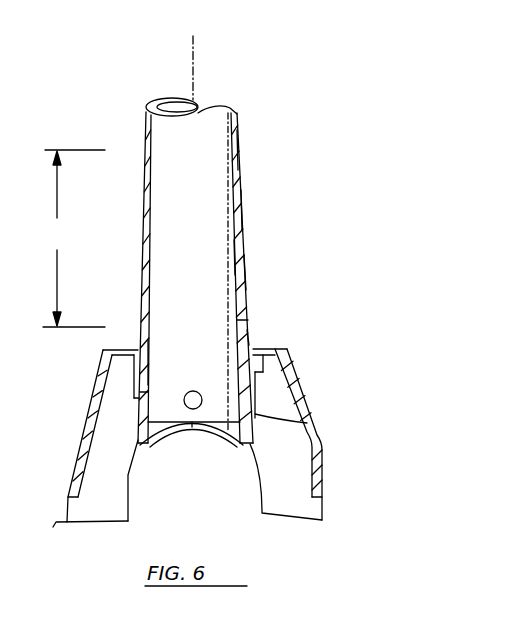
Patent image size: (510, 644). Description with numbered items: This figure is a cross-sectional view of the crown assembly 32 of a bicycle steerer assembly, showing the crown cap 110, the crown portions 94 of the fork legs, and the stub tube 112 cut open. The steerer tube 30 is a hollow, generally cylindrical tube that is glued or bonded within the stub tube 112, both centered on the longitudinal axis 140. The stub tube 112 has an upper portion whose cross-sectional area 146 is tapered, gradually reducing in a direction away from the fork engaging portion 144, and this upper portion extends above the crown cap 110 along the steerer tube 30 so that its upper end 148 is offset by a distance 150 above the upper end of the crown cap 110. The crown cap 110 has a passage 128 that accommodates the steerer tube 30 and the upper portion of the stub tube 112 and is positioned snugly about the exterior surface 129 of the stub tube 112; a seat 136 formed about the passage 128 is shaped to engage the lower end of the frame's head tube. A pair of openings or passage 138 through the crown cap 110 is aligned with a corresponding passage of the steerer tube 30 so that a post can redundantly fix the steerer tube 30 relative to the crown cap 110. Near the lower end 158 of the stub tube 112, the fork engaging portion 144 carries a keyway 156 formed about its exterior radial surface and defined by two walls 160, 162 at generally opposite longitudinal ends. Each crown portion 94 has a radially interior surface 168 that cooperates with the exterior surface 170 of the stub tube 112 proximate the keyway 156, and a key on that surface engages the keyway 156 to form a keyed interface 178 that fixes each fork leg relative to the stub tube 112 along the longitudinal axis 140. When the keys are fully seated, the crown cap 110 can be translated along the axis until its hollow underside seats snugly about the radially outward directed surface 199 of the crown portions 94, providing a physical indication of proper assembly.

The steerer tube 30 is at (238, 115).
The longitudinal axis 140 is at (196, 36).
The upper end 148 is at (240, 158).
The stub tube 112 is at (248, 211).
The cross-sectional area 146 is at (242, 257).
The exterior surface 129 is at (250, 268).
The crown assembly 32 is at (317, 126).
The passage 128 is at (248, 323).
The seat 136 is at (255, 335).
The keyed interface 178 is at (270, 349).
The exterior surface 170 is at (255, 395).
The crown cap 110 is at (300, 398).
The radially interior surface 168 is at (258, 414).
The radially outward directed surface 199 is at (92, 390).
The fork engaging portion 144 is at (128, 411).
The crown portion 94 is at (248, 487).
The lower end 158 is at (240, 446).
The wall 160 is at (148, 356).
The keyway 156 is at (150, 372).
The passage 138 is at (203, 377).
The wall 162 is at (143, 396).
The distance 150 is at (71, 238).